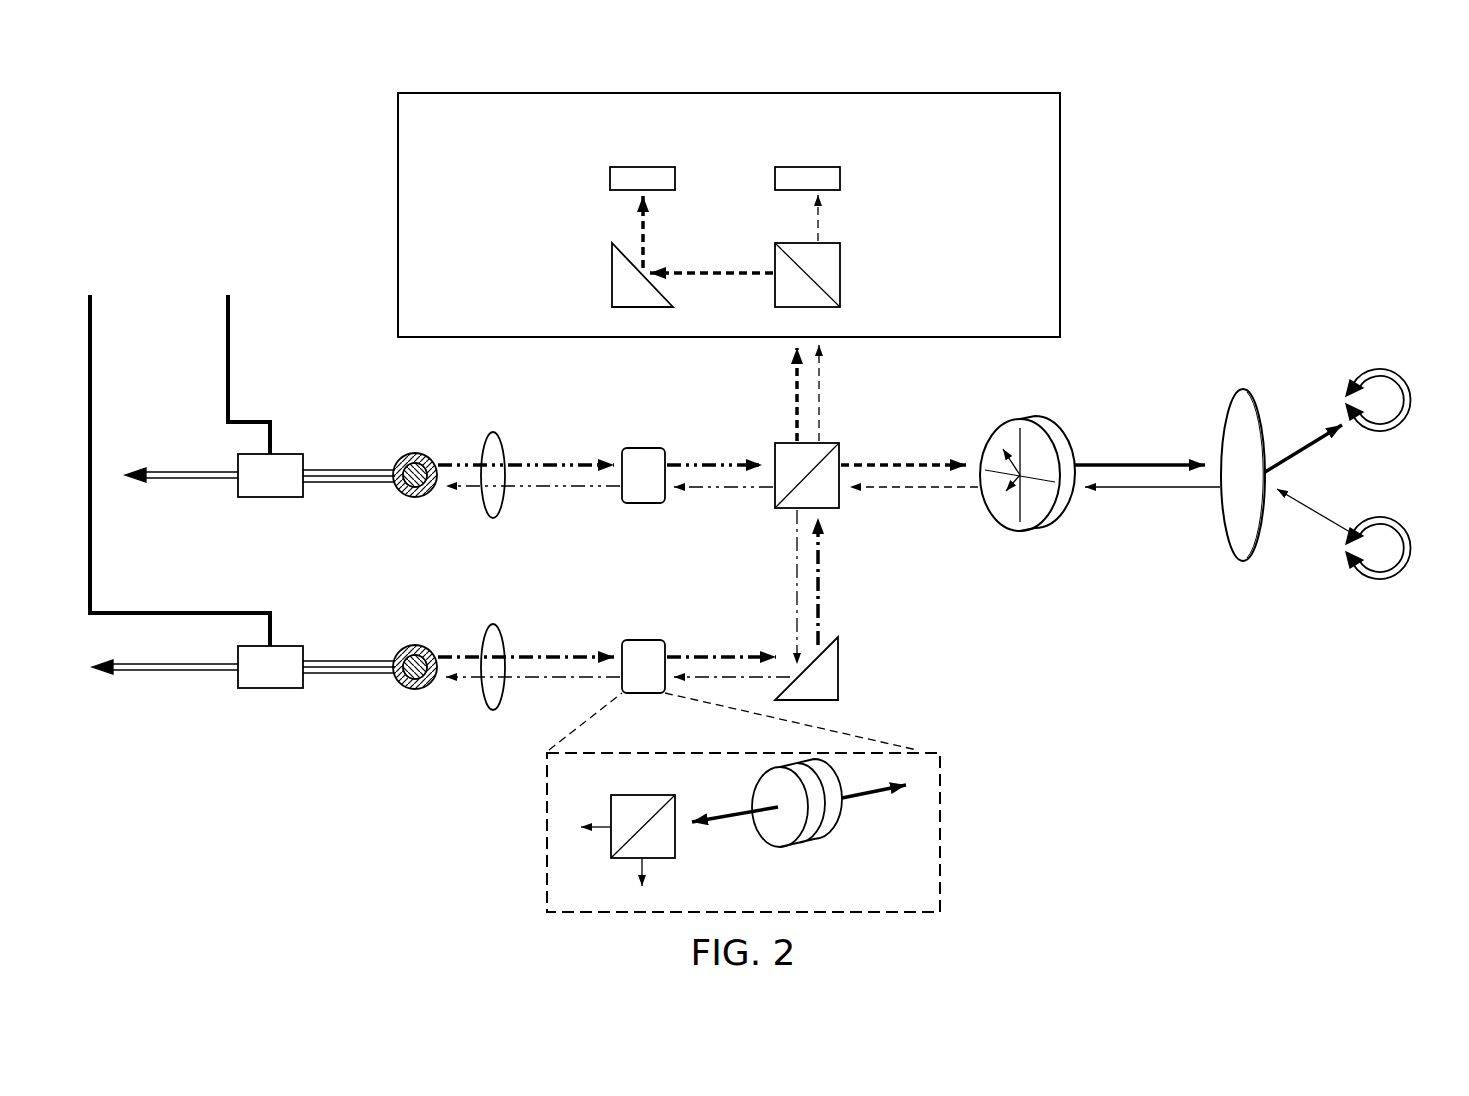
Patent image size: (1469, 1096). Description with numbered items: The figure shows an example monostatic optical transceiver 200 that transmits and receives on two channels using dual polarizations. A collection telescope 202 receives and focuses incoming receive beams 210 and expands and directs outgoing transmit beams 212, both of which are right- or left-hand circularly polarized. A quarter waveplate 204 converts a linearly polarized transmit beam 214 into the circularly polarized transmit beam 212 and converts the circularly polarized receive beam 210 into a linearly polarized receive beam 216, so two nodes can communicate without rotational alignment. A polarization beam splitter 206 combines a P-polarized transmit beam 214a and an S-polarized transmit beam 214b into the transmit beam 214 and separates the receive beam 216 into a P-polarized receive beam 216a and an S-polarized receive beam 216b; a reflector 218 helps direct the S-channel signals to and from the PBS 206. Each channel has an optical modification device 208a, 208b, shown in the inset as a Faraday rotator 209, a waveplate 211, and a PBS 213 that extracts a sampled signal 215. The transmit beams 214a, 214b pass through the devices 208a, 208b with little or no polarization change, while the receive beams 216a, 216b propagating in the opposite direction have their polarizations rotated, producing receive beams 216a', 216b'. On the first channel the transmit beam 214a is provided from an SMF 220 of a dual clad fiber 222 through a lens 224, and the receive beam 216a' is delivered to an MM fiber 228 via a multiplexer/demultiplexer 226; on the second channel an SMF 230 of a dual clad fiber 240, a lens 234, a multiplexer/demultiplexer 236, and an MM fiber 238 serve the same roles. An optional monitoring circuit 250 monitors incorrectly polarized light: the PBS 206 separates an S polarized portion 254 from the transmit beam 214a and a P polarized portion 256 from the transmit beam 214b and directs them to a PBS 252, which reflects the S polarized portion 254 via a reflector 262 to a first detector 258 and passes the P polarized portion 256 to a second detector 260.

The monostatic optical transceiver 200 is at (1268, 138).
The collection telescope 202 is at (1245, 392).
The quarter waveplate 204 is at (1040, 532).
The polarization beam splitter 206 is at (790, 510).
The optical modification device 208a is at (645, 505).
The optical modification device 208b is at (640, 640).
The Faraday rotator 209 is at (752, 795).
The receive beam 210 is at (1330, 515).
The waveplate 211 is at (855, 812).
The transmit beam 212 is at (1322, 434).
The PBS 213 is at (678, 838).
The transmit beam 214 is at (932, 462).
The transmit beam 214a is at (710, 462).
The transmit beam 214b is at (822, 578).
The sampled signal 215 is at (640, 875).
The receive beam 216 is at (930, 490).
The receive beam 216a is at (723, 514).
The receive beam 216a' is at (533, 513).
The receive beam 216b is at (755, 587).
The receive beam 216b' is at (533, 703).
The reflector 218 is at (840, 668).
The SMF 220 is at (226, 358).
The dual clad fiber 222 is at (399, 455).
The lens 224 is at (488, 432).
The multiplexer/demultiplexer 226 is at (290, 452).
The MM fiber 228 is at (178, 482).
The SMF 230 is at (92, 402).
The lens 234 is at (490, 712).
The multiplexer/demultiplexer 236 is at (290, 645).
The MM fiber 238 is at (155, 676).
The dual clad fiber 240 is at (402, 691).
The monitoring circuit 250 is at (685, 215).
The PBS 252 is at (842, 292).
The S polarized portion 254 is at (795, 392).
The P polarized portion 256 is at (821, 406).
The first detector 258 is at (608, 178).
The second detector 260 is at (842, 178).
The reflector 262 is at (610, 292).